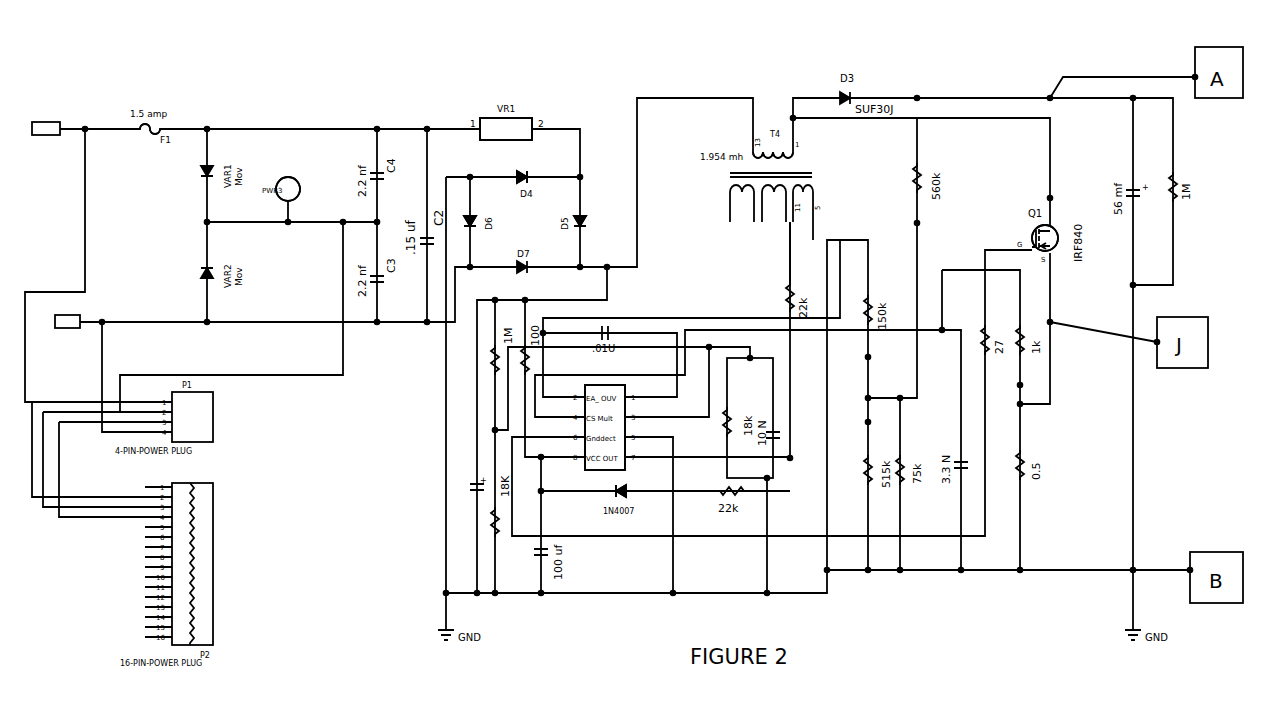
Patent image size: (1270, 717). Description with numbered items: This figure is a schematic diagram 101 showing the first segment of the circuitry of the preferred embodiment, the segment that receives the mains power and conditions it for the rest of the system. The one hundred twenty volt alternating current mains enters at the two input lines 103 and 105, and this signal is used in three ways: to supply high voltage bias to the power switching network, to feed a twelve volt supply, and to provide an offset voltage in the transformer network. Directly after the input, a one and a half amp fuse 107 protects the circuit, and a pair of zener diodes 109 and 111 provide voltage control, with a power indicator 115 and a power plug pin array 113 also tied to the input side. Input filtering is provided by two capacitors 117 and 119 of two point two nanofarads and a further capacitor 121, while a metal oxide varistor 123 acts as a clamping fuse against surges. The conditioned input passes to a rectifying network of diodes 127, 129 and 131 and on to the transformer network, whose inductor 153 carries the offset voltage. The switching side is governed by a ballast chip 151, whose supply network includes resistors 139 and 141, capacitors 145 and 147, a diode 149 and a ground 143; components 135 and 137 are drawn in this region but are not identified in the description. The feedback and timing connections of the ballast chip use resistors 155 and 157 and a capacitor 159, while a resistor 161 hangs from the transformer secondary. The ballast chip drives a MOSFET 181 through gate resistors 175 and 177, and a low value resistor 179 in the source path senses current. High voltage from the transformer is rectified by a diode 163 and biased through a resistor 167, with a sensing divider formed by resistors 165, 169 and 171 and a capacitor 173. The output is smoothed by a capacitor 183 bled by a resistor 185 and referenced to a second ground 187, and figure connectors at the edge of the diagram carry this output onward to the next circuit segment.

The schematic diagram 101 is at (722, 79).
The A.C. input line 103 is at (57, 117).
The A.C. input line 105 is at (66, 329).
The fuse 107 is at (166, 126).
The zener diode 109 is at (199, 181).
The zener diode 111 is at (199, 274).
The power plug pin array 113 is at (214, 437).
The PWR 115 is at (294, 178).
The capacitor 117 is at (378, 176).
The capacitor 119 is at (378, 285).
The capacitor 121 is at (427, 198).
The metal oxide varistor 123 is at (490, 141).
The diode 127 is at (469, 198).
The diode 129 is at (535, 173).
The diode 131 is at (582, 212).
The electrolytic capacitor 135 is at (471, 483).
The 1M resistor 137 is at (490, 358).
The resistor 139 is at (489, 540).
The resistor 141 is at (519, 378).
The ground 143 is at (445, 616).
The capacitor 145 is at (541, 562).
The capacitor 147 is at (621, 322).
The diode 149 is at (598, 495).
The ballast chip 151 is at (612, 383).
The inductor 153 is at (752, 152).
The resistor 155 is at (729, 403).
The resistor 157 is at (715, 497).
The capacitor 159 is at (776, 428).
The resistor 161 is at (788, 292).
The diode 163 is at (862, 95).
The resistor 165 is at (869, 292).
The resistor 167 is at (922, 152).
The resistor 169 is at (866, 448).
The resistor 171 is at (902, 448).
The capacitor 173 is at (958, 480).
The resistor 175 is at (985, 322).
The resistor 177 is at (1022, 364).
The resistor 179 is at (1022, 446).
The MOSFET 181 is at (1050, 213).
The capacitor 183 is at (1132, 213).
The resistor 185 is at (1175, 169).
The ground 187 is at (1128, 617).